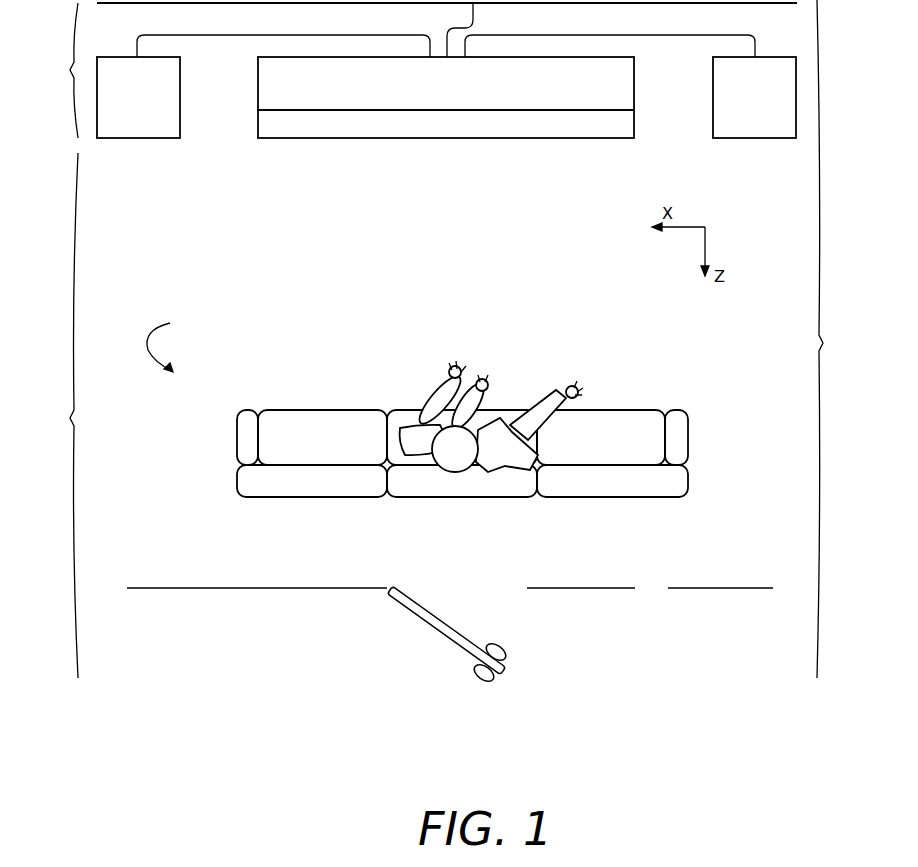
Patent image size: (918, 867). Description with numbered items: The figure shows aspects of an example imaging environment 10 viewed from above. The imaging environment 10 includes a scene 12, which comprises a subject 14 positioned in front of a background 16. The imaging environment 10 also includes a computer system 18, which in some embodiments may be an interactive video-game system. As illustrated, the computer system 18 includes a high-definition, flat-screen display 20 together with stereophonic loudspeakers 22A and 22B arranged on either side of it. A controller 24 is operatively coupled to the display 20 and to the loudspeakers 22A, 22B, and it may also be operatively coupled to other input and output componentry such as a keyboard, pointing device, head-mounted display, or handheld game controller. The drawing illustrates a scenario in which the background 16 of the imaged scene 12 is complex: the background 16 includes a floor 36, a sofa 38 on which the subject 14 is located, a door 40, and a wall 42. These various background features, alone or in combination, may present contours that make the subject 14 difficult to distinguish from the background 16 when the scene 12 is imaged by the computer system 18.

The imaging environment 10 is at (834, 339).
The scene 12 is at (61, 415).
The subject 14 is at (417, 407).
The background 16 is at (171, 343).
The computer system 18 is at (61, 70).
The flat-screen display 20 is at (460, 136).
The stereophonic loudspeaker 22A is at (157, 108).
The stereophonic loudspeaker 22B is at (773, 108).
The controller 24 is at (460, 94).
The floor 36 is at (457, 267).
The sofa 38 is at (237, 481).
The door 40 is at (404, 614).
The wall 42 is at (450, 588).